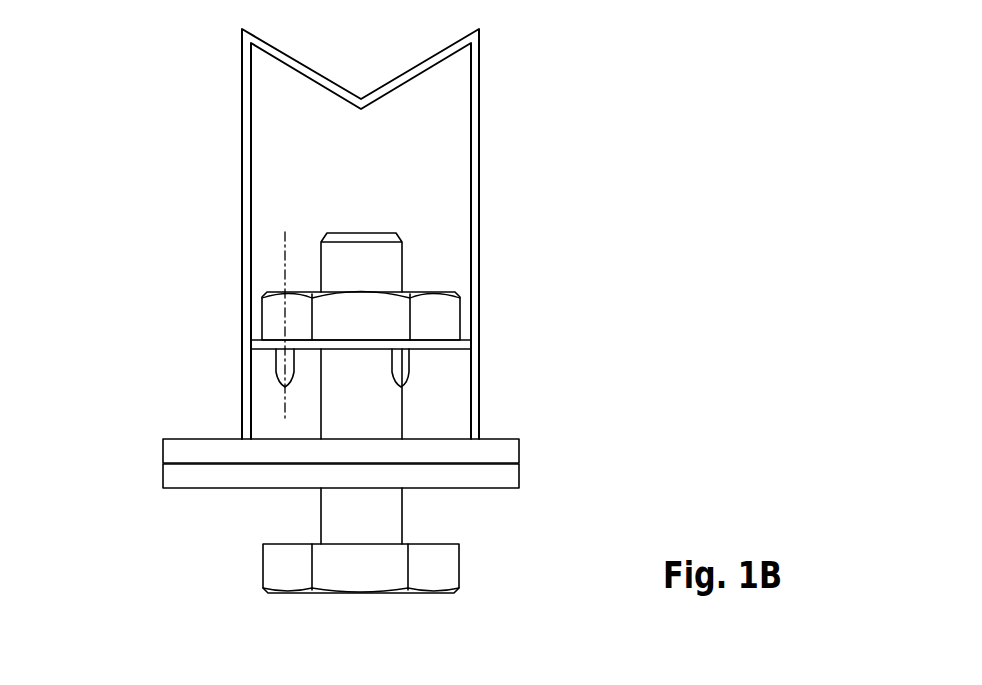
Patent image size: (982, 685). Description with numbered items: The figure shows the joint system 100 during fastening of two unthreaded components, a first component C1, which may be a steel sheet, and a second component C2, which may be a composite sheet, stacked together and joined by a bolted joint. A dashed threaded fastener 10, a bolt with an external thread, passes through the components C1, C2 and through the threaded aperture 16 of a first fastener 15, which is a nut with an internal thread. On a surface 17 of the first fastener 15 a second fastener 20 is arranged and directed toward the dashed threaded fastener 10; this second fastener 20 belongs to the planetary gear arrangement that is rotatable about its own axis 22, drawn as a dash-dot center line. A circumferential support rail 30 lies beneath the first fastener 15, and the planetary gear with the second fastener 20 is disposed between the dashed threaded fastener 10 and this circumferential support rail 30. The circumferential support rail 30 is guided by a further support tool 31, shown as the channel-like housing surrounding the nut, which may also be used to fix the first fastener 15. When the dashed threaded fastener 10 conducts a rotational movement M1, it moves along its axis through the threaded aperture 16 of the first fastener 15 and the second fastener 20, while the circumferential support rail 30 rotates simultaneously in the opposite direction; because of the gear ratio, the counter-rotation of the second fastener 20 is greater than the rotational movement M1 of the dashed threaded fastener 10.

The joint system 100 is at (552, 41).
The further support tool 31 is at (242, 138).
The axis 22 is at (287, 243).
The threaded aperture 16 is at (383, 283).
The first fastener 15 is at (446, 311).
The circumferential support rail 30 is at (455, 349).
The second fastener 20 is at (280, 364).
The surface 17 is at (361, 364).
The first component C1 is at (168, 452).
The second component C2 is at (168, 478).
The dashed threaded fastener 10 is at (327, 516).
The rotational movement M1 is at (367, 523).